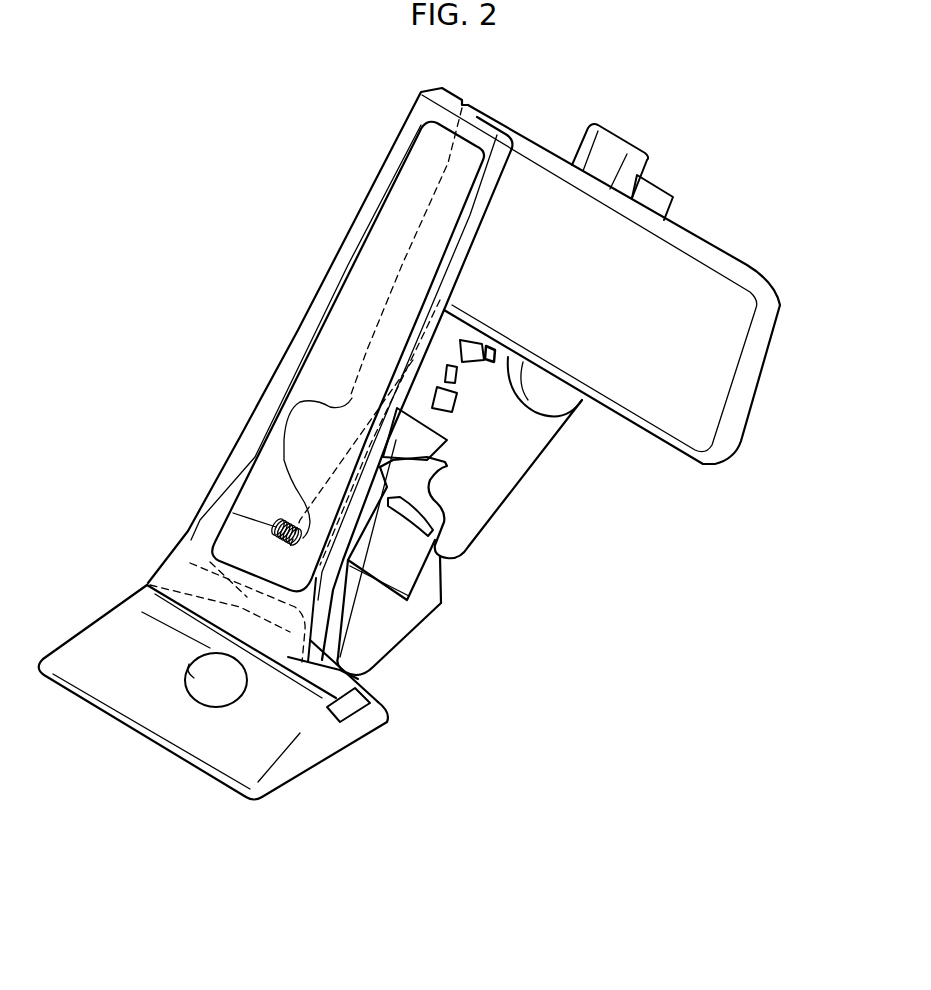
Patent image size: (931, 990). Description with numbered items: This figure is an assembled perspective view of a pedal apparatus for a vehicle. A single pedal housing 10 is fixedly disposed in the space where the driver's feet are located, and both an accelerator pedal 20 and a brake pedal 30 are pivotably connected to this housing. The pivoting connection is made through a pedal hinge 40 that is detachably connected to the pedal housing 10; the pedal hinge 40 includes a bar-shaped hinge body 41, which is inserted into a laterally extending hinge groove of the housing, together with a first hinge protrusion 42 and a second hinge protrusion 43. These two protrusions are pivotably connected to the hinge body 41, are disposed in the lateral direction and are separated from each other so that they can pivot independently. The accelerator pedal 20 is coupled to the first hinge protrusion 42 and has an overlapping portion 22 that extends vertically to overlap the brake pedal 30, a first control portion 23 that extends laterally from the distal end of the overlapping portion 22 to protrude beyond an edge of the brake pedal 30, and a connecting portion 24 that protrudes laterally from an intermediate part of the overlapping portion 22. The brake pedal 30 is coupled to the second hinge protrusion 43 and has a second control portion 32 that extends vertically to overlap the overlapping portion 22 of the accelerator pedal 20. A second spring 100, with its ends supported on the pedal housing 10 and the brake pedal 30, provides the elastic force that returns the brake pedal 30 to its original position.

The pedal housing 10 is at (180, 732).
The accelerator pedal 20 is at (713, 240).
The overlapping portion 22 is at (403, 310).
The first control portion 23 is at (717, 363).
The connecting portion 24 is at (310, 430).
The brake pedal 30 is at (372, 178).
The second control portion 32 is at (375, 257).
The pedal hinge 40 is at (347, 727).
The hinge body 41 is at (347, 707).
The first hinge protrusion 42 is at (328, 633).
The second hinge protrusion 43 is at (212, 582).
The second spring 100 is at (222, 503).